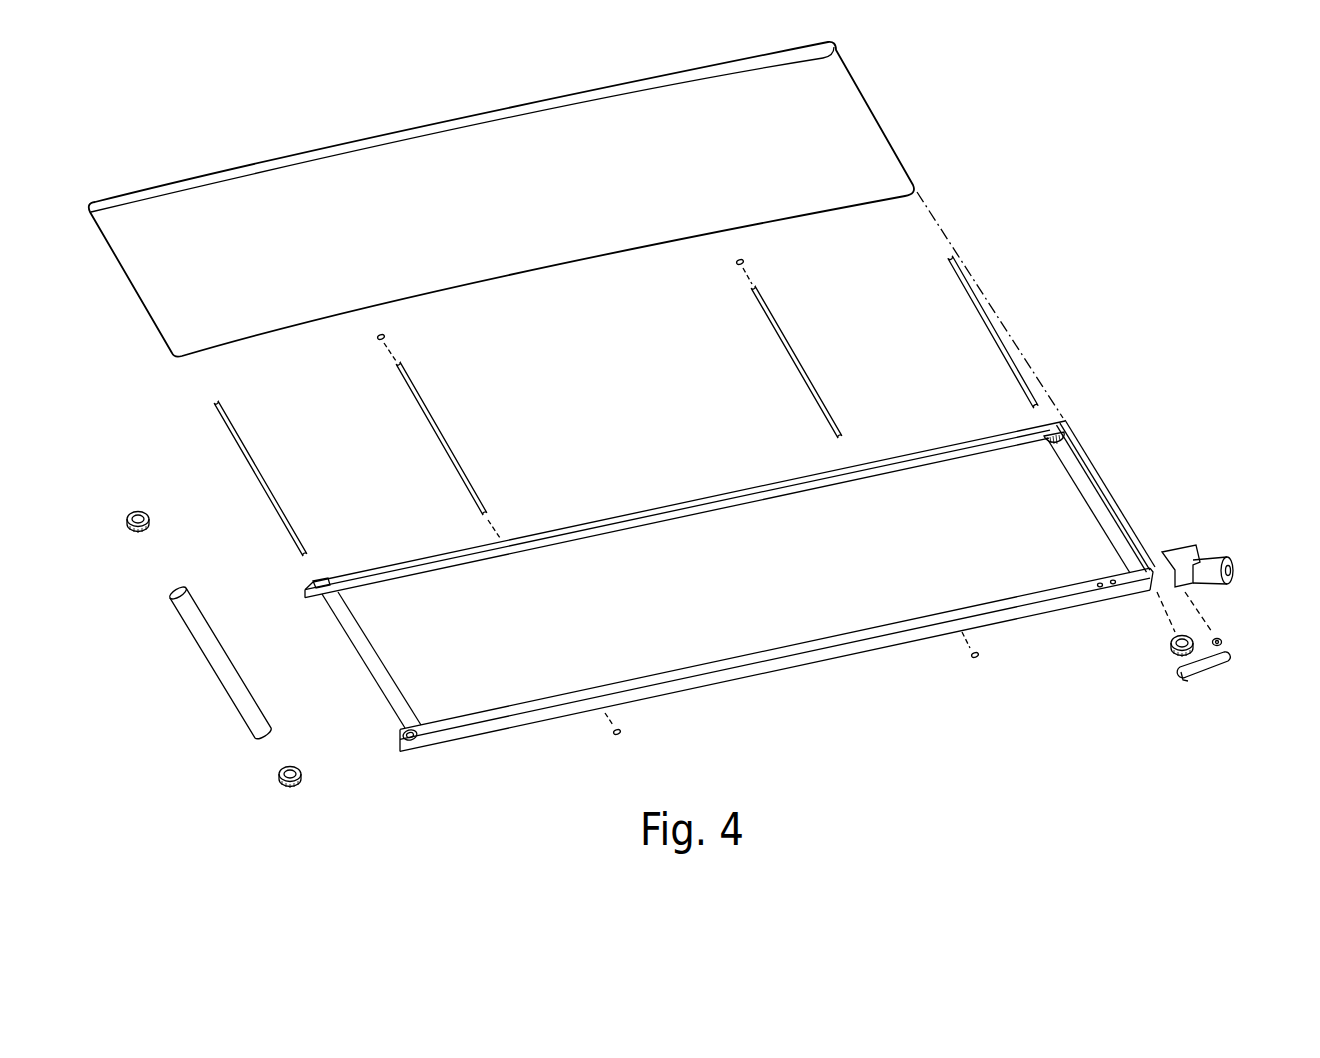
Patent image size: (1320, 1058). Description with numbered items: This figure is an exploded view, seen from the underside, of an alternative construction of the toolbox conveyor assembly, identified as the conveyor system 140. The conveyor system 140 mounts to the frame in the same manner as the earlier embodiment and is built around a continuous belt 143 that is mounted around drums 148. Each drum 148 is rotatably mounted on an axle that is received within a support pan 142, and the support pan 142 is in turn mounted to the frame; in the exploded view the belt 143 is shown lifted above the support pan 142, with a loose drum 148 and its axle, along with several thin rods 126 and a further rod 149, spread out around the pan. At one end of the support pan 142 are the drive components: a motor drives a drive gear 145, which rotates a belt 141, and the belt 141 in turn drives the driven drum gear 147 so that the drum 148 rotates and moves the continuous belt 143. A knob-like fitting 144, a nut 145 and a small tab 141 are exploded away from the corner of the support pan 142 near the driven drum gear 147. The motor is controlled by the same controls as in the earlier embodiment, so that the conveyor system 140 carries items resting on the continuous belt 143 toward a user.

The rod 126 is at (440, 447).
The conveyor system 140 is at (1093, 293).
The belt 141 is at (1184, 677).
The support pan 142 is at (643, 622).
The continuous belt 143 is at (881, 127).
The knob 144 is at (1212, 580).
The drive gear 145 is at (1226, 643).
The driven drum gear 147 is at (1172, 646).
The drum 148 is at (1092, 490).
The rod 149 is at (983, 310).